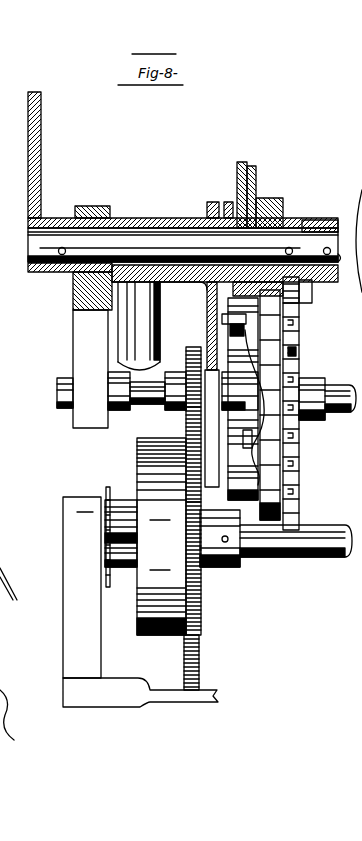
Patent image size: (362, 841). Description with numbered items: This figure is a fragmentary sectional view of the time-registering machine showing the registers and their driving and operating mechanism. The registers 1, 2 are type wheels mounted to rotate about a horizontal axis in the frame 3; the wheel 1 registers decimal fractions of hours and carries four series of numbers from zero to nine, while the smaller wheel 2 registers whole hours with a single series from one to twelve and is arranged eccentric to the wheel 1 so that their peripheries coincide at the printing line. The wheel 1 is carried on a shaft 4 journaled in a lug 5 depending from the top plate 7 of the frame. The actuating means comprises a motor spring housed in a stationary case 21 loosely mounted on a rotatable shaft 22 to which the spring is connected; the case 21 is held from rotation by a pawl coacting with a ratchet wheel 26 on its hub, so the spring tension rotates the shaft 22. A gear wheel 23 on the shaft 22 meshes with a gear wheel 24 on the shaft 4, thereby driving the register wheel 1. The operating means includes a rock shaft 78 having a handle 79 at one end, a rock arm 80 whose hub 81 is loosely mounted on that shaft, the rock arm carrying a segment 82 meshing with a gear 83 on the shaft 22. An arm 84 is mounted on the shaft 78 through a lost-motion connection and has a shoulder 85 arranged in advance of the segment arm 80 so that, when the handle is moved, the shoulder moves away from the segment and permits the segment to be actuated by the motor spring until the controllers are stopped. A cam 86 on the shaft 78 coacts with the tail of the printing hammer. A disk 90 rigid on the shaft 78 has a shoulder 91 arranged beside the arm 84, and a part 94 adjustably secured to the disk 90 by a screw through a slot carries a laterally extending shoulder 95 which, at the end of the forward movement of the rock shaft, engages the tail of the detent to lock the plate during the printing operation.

The register 1 is at (299, 448).
The register 2 is at (312, 298).
The frame 3 is at (73, 331).
The shaft 4 is at (332, 418).
The lug 5 is at (100, 364).
The top plate 7 is at (73, 286).
The stationary case 21 is at (169, 536).
The rotatable shaft 22 is at (306, 558).
The gear wheel 23 is at (199, 644).
The gear wheel 24 is at (193, 347).
The ratchet wheel 26 is at (107, 489).
The shaft 78 is at (28, 229).
The handle 79 is at (28, 170).
The rock arm 80 is at (207, 316).
The hub 81 is at (156, 217).
The segment 82 is at (207, 460).
The gear 83 is at (212, 585).
The arm 84 is at (224, 352).
The shoulder 85 is at (212, 497).
The cam 86 is at (313, 219).
The disk 90 is at (237, 166).
The shoulder 91 is at (235, 346).
The part 94 is at (263, 199).
The shoulder 95 is at (251, 166).